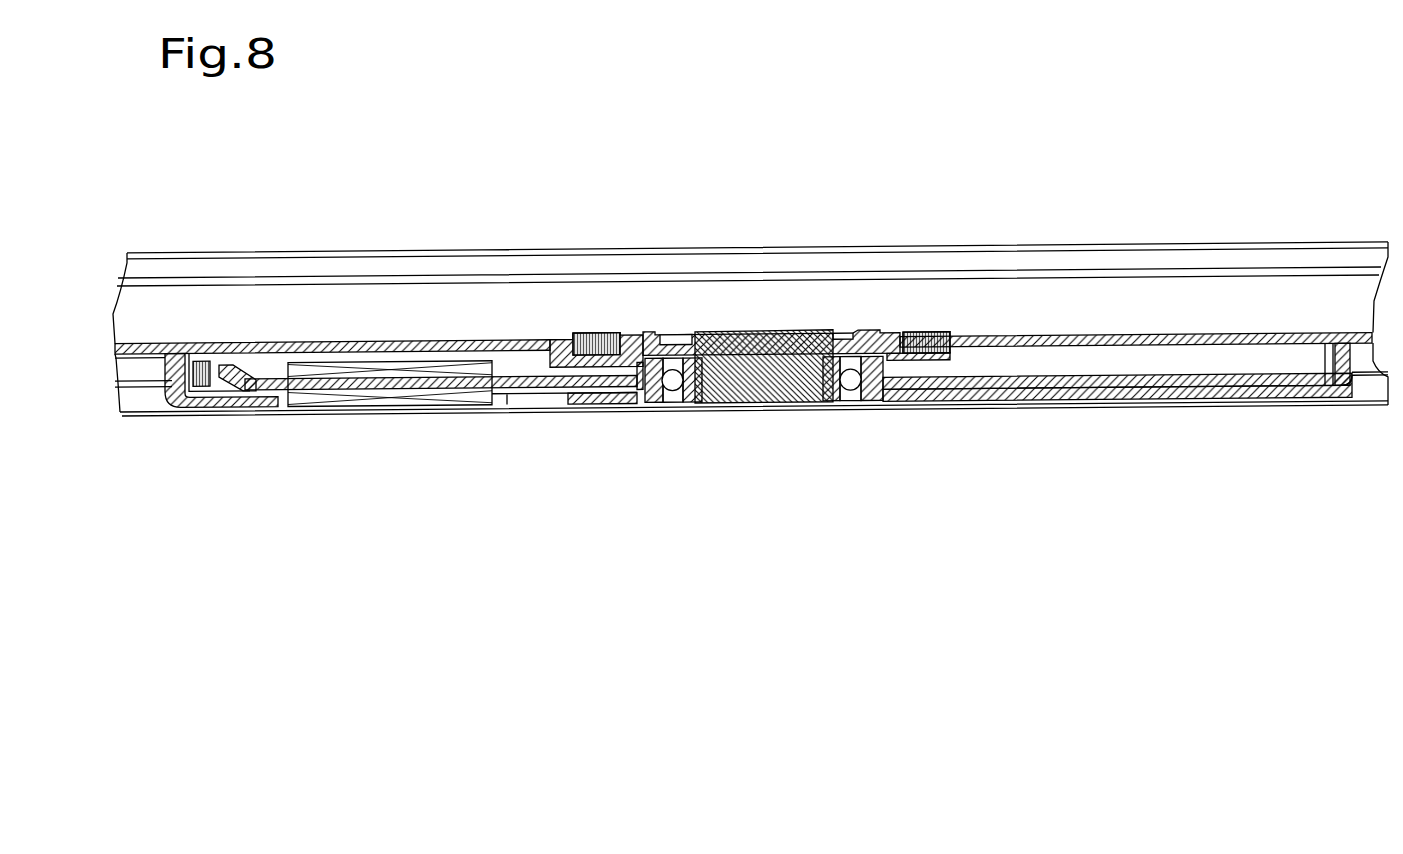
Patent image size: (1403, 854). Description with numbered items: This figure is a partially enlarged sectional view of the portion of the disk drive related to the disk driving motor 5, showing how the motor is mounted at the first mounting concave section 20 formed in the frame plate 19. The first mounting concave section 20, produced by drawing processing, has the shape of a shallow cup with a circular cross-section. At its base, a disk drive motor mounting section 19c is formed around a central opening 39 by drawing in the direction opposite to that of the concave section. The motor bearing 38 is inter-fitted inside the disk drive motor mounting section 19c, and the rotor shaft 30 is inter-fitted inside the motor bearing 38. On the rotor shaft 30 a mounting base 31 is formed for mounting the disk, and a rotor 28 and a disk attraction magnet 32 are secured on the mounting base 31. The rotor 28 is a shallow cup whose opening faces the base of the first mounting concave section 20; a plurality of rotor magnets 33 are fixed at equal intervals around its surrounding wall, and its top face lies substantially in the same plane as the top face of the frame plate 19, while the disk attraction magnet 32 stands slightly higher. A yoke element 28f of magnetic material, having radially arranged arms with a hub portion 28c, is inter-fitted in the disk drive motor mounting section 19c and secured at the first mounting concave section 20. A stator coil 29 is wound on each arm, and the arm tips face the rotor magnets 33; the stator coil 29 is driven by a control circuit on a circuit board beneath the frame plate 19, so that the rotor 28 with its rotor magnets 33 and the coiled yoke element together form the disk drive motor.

The tripod head assembly 5 is at (833, 312).
The frame plate 19 is at (1367, 348).
The disk drive motor mounting section 19c is at (637, 413).
The first mounting concave section 20 is at (1082, 403).
The rotor 28 is at (507, 343).
The hook portion of slide plate 28c is at (179, 343).
The yoke element 28f is at (255, 400).
The stator coil 29 is at (322, 402).
The rotor shaft 30 is at (760, 375).
The mounting base 31 is at (888, 333).
The disk attraction magnet 32 is at (927, 333).
The rotor magnets 33 is at (208, 348).
The motor bearing 38 is at (672, 403).
The opening 39 is at (863, 403).